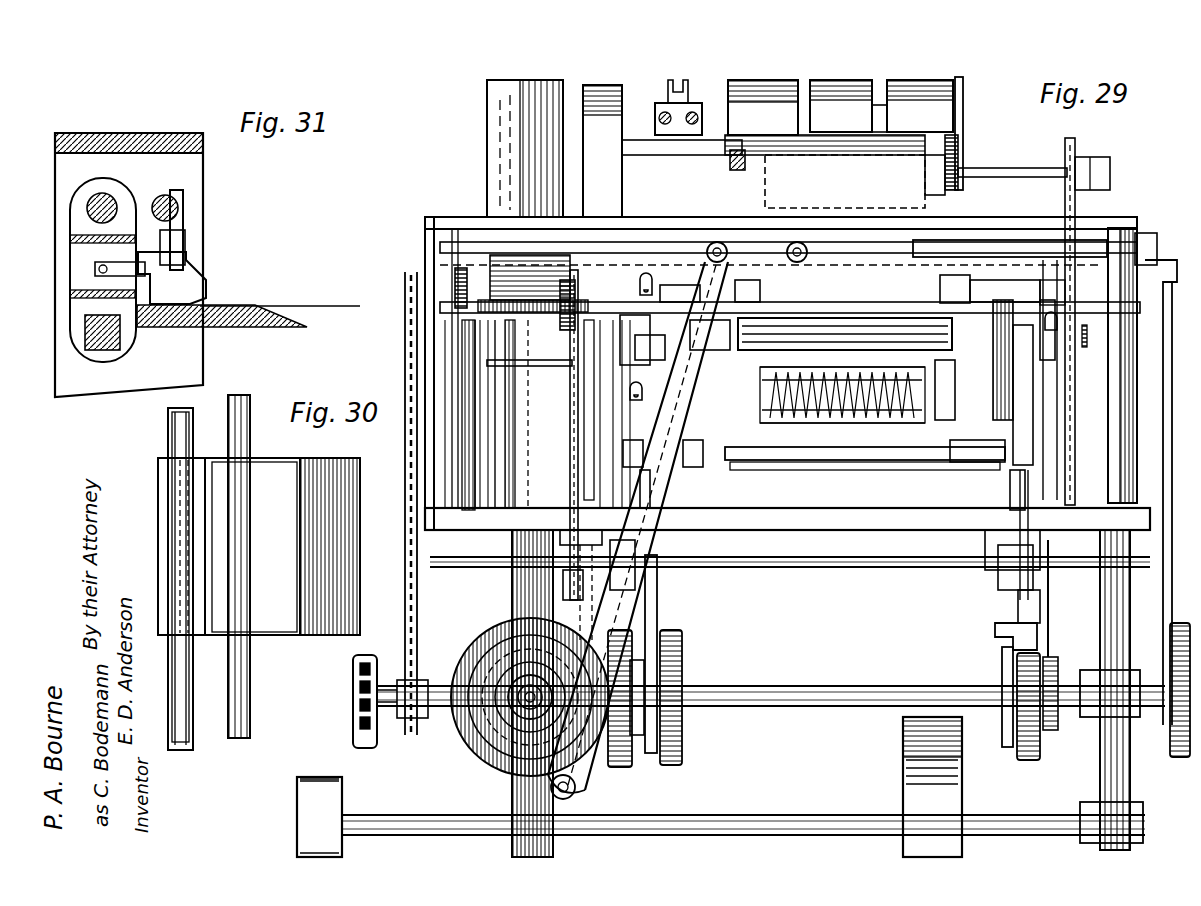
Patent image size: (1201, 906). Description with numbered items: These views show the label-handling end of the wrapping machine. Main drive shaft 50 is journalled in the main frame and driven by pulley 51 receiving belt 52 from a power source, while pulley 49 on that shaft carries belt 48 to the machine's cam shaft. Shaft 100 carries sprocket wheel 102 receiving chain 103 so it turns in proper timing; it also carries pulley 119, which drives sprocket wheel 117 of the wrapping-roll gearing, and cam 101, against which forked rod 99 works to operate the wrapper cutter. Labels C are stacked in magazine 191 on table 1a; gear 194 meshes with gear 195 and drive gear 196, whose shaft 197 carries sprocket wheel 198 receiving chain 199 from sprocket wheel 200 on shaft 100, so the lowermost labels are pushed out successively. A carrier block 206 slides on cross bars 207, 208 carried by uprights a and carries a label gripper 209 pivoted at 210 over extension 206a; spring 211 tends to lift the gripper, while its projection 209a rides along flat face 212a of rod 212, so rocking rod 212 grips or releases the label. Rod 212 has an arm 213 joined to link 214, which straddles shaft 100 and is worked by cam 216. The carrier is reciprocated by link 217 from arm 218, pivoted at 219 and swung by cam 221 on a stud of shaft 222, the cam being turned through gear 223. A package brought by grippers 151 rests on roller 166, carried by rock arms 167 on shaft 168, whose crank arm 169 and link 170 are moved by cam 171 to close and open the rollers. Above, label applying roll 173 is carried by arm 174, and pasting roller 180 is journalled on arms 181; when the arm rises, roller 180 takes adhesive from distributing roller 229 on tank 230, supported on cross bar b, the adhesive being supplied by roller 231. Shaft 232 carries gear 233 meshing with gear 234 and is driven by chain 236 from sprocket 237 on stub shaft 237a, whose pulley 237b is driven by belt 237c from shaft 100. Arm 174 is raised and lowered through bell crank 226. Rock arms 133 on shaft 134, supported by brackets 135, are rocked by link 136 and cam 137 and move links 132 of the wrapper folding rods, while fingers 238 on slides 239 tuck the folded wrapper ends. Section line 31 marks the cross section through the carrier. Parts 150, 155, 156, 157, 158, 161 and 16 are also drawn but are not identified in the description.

In FIG. 29, the magazine 191 is at (510, 135).
In FIG. 29, the arm 174 is at (640, 167).
In FIG. 29, the spaced arms 181 is at (740, 140).
In FIG. 29, the pasting roller 180 is at (732, 170).
In FIG. 29, the cross bar b is at (650, 225).
In FIG. 29, the distributing roller 229 is at (825, 131).
In FIG. 29, the tank 230 is at (844, 131).
In FIG. 29, the roller 231 is at (910, 148).
In FIG. 29, the section line 31 is at (835, 240).
In FIG. 29, the label applying roll 173 is at (960, 112).
In FIG. 29, the gear 234 is at (960, 150).
In FIG. 29, the shaft 232 is at (1045, 169).
In FIG. 29, the gear 233 is at (943, 192).
In FIG. 31, the cross bar 207 is at (110, 205).
In FIG. 30, the cross bar 207 is at (172, 436).
In FIG. 29, the cross bar 207 is at (983, 240).
In FIG. 29, the chain 236 is at (1050, 240).
In FIG. 31, the carrier block 206 is at (96, 192).
In FIG. 29, the carrier block 206 is at (916, 262).
In FIG. 31, the cross bar 208 is at (120, 350).
In FIG. 30, the cross bar 208 is at (175, 408).
In FIG. 29, the cross bar 208 is at (990, 290).
In FIG. 29, the arm 213 is at (1110, 295).
In FIG. 29, the gear 194 is at (455, 285).
In FIG. 29, the sprocket wheel 117 is at (400, 290).
In FIG. 29, the gear 223 is at (495, 625).
In FIG. 29, the arm 218 is at (695, 285).
In FIG. 29, the grippers 151 is at (745, 290).
In FIG. 30, the link 217 is at (250, 400).
In FIG. 29, the link 217 is at (722, 242).
In FIG. 29, the gear 195 is at (498, 315).
In FIG. 29, the sprocket wheel 198 is at (580, 354).
In FIG. 29, the shaft 197 is at (550, 367).
In FIG. 29, the drive gear 196 is at (468, 397).
In FIG. 29, the uprights a is at (450, 467).
In FIG. 29, the chain 199 is at (580, 459).
In FIG. 29, the clip 155 is at (630, 397).
In FIG. 29, the crank arm 169 is at (622, 447).
In FIG. 29, the block 161 is at (625, 342).
In FIG. 29, the spring seat 156 is at (930, 422).
In FIG. 29, the spring 157 is at (842, 402).
In FIG. 29, the roller 166 is at (845, 334).
In FIG. 29, the fingers 238 is at (745, 352).
In FIG. 29, the slides 239 is at (950, 372).
In FIG. 29, the clip 150 is at (1057, 352).
In FIG. 29, the rock arms 167 is at (1035, 419).
In FIG. 29, the member 158 is at (948, 460).
In FIG. 29, the shaft 168 is at (810, 470).
In FIG. 29, the table 1a is at (865, 508).
In FIG. 29, the links 132 is at (650, 487).
In FIG. 29, the rock arms 133 is at (700, 542).
In FIG. 29, the link 214 is at (1162, 502).
In FIG. 29, the bell crank 226 is at (575, 568).
In FIG. 29, the link 170 is at (660, 595).
In FIG. 29, the shaft 134 is at (822, 563).
In FIG. 29, the brackets 135 is at (700, 557).
In FIG. 29, the shaft 100 is at (845, 685).
In FIG. 29, the sprocket wheel 102 is at (352, 697).
In FIG. 29, the chain 103 is at (372, 742).
In FIG. 29, the cam 221 is at (452, 665).
In FIG. 29, the shaft 222 is at (548, 769).
In FIG. 29, the pulley 119 is at (530, 697).
In FIG. 29, the pivot 219 is at (550, 788).
In FIG. 29, the sprocket wheel 200 is at (615, 770).
In FIG. 29, the cam 101 is at (620, 768).
In FIG. 29, the rod 99 is at (648, 737).
In FIG. 29, the cam 171 is at (683, 665).
In FIG. 29, the main drive shaft 50 is at (780, 815).
In FIG. 29, the belt 48 is at (296, 812).
In FIG. 29, the pulley 49 is at (296, 784).
In FIG. 29, the belt 52 is at (932, 787).
In FIG. 29, the pulley 51 is at (900, 767).
In FIG. 29, the link 136 is at (1002, 662).
In FIG. 29, the cam 137 is at (1025, 757).
In FIG. 29, the stub shaft 237a is at (1052, 727).
In FIG. 29, the sprocket 237 is at (1072, 598).
In FIG. 29, the pulley 237b is at (1018, 602).
In FIG. 29, the belt 237c is at (998, 632).
In FIG. 29, the cam 216 is at (1172, 649).
In FIG. 29, the frame 16 is at (1149, 580).
In FIG. 31, the flat face 212a is at (180, 190).
In FIG. 31, the rod 212 is at (185, 225).
In FIG. 31, the projection 209a is at (175, 245).
In FIG. 30, the projection 209a is at (250, 538).
In FIG. 31, the label gripper 209 is at (190, 290).
In FIG. 31, the pivot 210 is at (96, 270).
In FIG. 31, the spring 211 is at (102, 273).
In FIG. 31, the extension 206a is at (222, 328).
In FIG. 31, the labels C is at (280, 290).